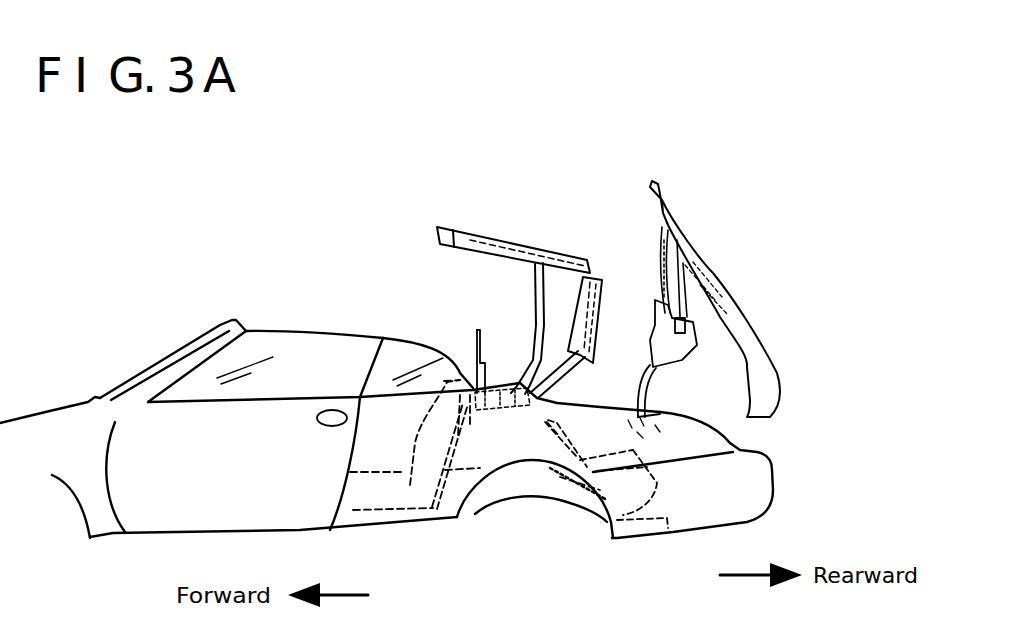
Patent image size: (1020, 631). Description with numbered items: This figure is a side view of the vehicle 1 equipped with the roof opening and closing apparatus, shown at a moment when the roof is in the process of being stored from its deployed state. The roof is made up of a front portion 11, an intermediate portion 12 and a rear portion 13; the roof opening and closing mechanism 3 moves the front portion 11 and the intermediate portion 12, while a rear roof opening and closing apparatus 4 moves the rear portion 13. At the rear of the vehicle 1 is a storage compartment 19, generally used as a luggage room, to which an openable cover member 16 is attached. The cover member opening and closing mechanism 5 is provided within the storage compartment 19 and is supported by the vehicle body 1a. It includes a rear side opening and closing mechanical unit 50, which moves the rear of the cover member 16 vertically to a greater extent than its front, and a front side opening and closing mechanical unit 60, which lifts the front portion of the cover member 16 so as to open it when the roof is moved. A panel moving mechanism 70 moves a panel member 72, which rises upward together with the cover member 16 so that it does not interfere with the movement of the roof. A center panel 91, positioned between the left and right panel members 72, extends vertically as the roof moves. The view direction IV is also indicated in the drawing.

The vehicle 1 is at (115, 343).
The vehicle body 1a is at (493, 447).
The roof opening and closing mechanism 3 is at (520, 310).
The rear roof opening and closing apparatus 4 is at (547, 449).
The front portion 11 is at (487, 229).
The intermediate portion 12 is at (603, 307).
The rear portion 13 is at (632, 493).
The cover member 16 is at (720, 280).
The storage compartment 19 is at (710, 413).
The cover member opening and closing mechanism 5 is at (717, 353).
The rear side opening and closing mechanical unit 50 is at (700, 307).
The front side opening and closing mechanical unit 60 is at (677, 387).
The panel moving mechanism 70 is at (650, 275).
The panel member 72 is at (660, 192).
The center panel 91 is at (474, 345).
The section IV indicator IV is at (738, 400).